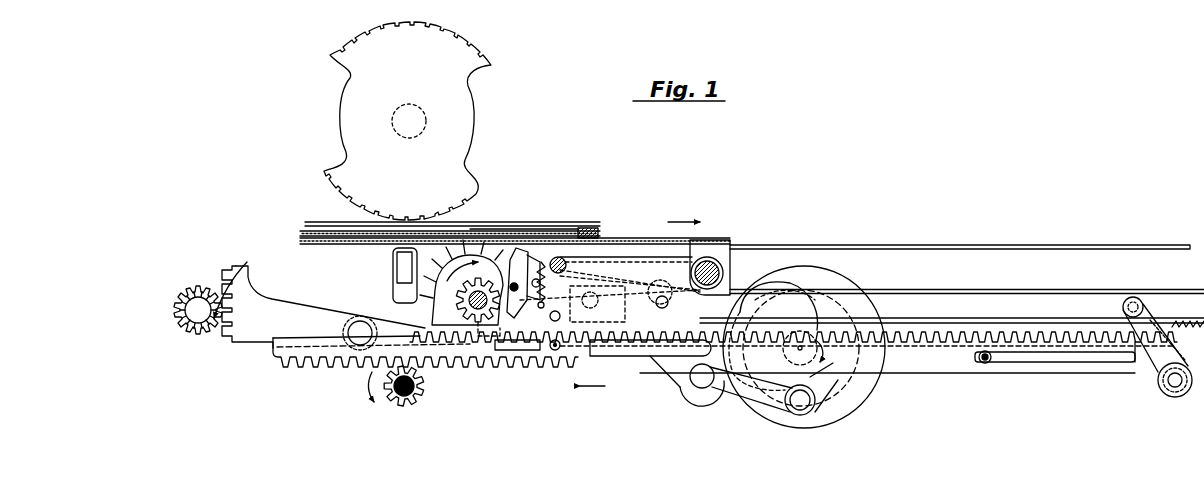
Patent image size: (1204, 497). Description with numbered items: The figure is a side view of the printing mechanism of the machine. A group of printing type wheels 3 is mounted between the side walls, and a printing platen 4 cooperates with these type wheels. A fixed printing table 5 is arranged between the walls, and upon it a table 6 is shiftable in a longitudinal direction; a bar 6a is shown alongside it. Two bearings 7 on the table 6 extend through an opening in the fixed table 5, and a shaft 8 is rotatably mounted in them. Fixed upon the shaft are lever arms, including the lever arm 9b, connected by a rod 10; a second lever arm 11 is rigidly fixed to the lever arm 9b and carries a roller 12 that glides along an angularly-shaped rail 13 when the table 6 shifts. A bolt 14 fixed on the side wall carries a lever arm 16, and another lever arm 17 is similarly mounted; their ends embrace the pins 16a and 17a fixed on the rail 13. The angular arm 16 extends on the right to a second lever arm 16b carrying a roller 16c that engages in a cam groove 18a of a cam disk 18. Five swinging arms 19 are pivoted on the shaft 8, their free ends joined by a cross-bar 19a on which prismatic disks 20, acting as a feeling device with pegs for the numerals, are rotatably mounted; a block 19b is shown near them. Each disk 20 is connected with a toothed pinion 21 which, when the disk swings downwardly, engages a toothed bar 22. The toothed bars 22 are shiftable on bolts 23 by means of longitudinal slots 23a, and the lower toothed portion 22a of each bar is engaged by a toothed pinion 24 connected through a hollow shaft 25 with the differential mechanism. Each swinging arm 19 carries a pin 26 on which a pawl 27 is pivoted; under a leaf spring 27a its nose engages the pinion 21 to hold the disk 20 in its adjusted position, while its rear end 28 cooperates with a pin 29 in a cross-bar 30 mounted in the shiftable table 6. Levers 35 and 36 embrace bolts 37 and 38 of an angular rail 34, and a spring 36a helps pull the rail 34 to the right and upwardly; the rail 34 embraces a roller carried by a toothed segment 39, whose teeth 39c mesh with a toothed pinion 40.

The printing type wheels 3 is at (397, 220).
The printing platen 4 is at (400, 285).
The fixed printing table 5 is at (893, 245).
The table 6 is at (622, 237).
The slide rail bar 6a is at (303, 236).
The bearings 7 is at (703, 248).
The shaft 8 is at (712, 268).
The lever arm 9b is at (693, 257).
The rod 10 is at (560, 262).
The second lever arm 11 is at (640, 260).
The roller 12 is at (610, 300).
The angularly-shaped rail 13 is at (950, 290).
The bolt 14 is at (704, 372).
The lever arm 16 is at (660, 346).
The pin 16a is at (640, 356).
The second lever arm 16b is at (778, 410).
The roller 16c is at (806, 408).
The lever arm 17 is at (1147, 318).
The pin 17a is at (1128, 297).
The cam disk 18 is at (873, 378).
The cam groove 18a is at (826, 380).
The swinging arms 19 is at (600, 335).
The cross-bar 19a is at (480, 336).
The stop block 19b is at (588, 228).
The disks 20 is at (447, 300).
The toothed pinion 21 is at (478, 314).
The toothed bar 22 is at (690, 344).
The toothed portion 22a is at (345, 368).
The bolts 23 is at (987, 362).
The longitudinal slots 23a is at (1090, 362).
The toothed pinion 24 is at (405, 402).
The hollow shaft 25 is at (392, 396).
The pin 26 is at (520, 252).
The pawl 27 is at (513, 284).
The leaf spring 27a is at (520, 345).
The rear end 28 is at (530, 262).
The pin 29 is at (542, 262).
The cross-bar 30 is at (538, 280).
The angular rail 34 is at (940, 347).
The lever 35 is at (688, 370).
The lever 36 is at (1158, 362).
The spring 36a is at (1190, 318).
The bolt 37 is at (680, 300).
The bolt 38 is at (1135, 360).
The toothed segment 39 is at (258, 342).
The teeth 39c is at (237, 282).
The toothed pinion 40 is at (200, 336).